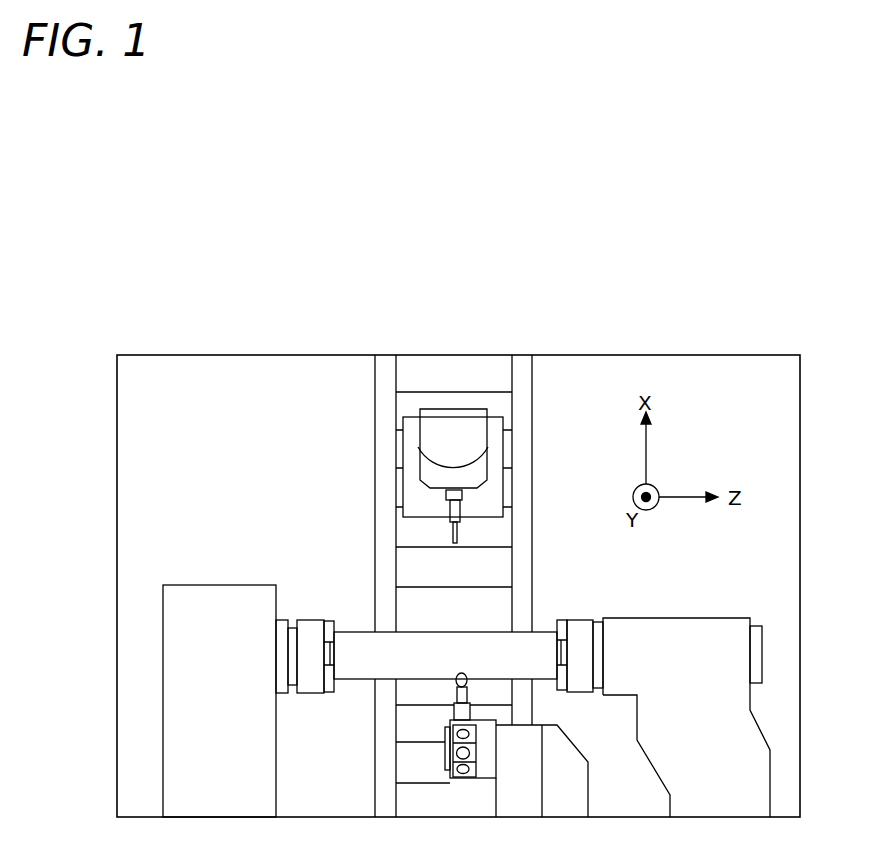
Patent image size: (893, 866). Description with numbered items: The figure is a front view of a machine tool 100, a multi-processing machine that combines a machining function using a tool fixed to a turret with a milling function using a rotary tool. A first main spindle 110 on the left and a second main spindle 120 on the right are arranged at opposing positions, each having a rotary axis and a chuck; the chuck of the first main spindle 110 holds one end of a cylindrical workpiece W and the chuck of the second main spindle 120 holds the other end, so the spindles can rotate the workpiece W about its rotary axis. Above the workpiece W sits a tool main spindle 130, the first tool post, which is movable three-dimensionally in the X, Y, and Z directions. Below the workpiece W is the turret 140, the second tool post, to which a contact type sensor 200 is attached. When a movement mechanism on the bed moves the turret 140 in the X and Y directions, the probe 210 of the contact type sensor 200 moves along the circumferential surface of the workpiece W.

The machine tool 100 is at (478, 328).
The first main spindle 110 is at (320, 642).
The second main spindle 120 is at (578, 645).
The tool main spindle 130 is at (453, 458).
The turret 140 is at (448, 752).
The contact type sensor 200 is at (465, 695).
The probe 210 is at (458, 672).
The workpiece W is at (408, 660).